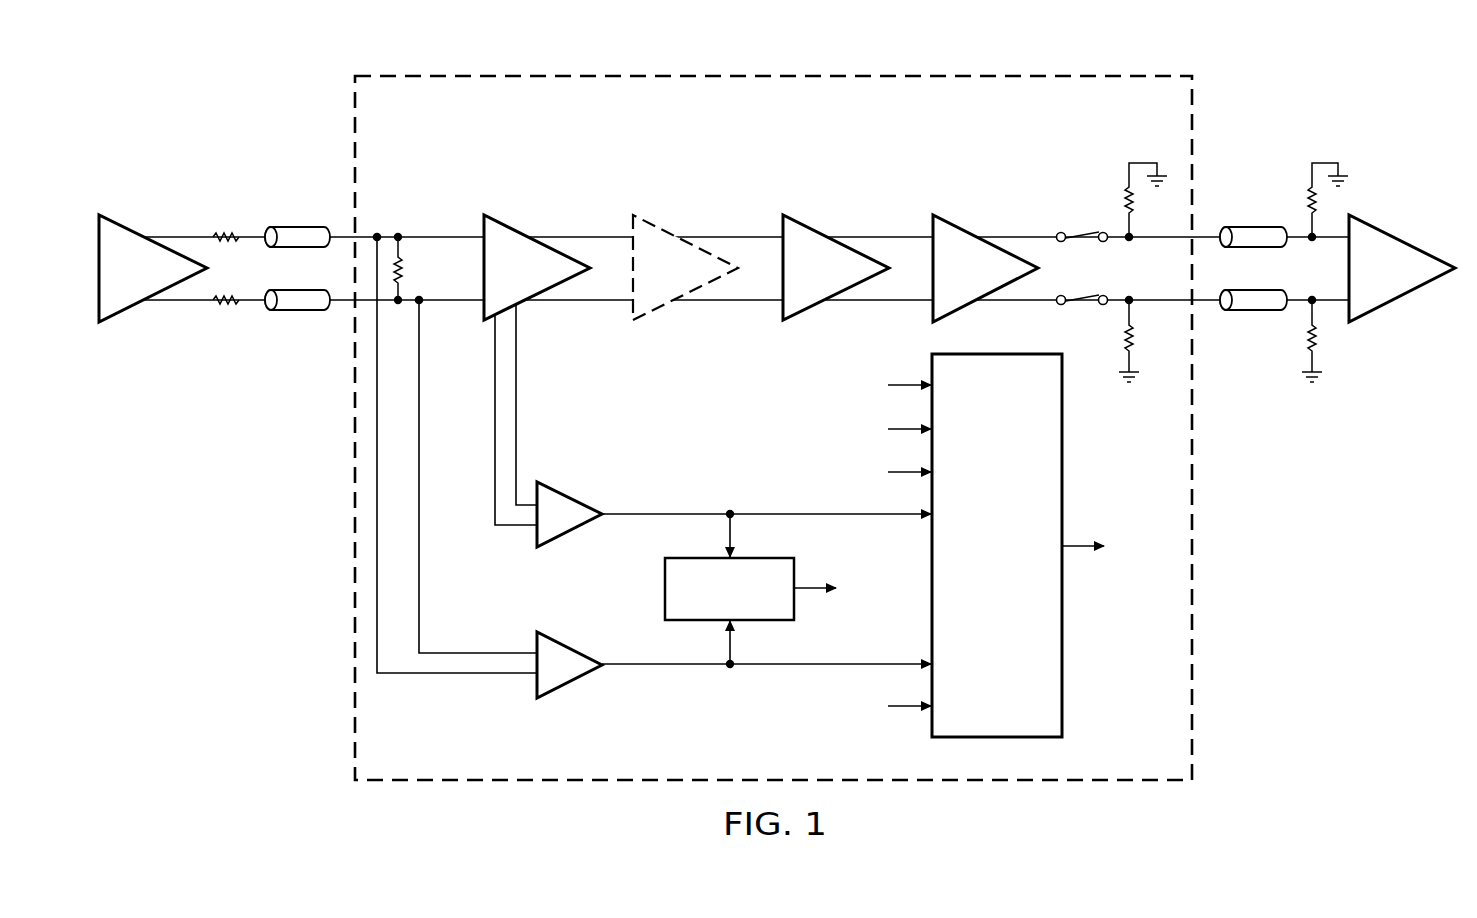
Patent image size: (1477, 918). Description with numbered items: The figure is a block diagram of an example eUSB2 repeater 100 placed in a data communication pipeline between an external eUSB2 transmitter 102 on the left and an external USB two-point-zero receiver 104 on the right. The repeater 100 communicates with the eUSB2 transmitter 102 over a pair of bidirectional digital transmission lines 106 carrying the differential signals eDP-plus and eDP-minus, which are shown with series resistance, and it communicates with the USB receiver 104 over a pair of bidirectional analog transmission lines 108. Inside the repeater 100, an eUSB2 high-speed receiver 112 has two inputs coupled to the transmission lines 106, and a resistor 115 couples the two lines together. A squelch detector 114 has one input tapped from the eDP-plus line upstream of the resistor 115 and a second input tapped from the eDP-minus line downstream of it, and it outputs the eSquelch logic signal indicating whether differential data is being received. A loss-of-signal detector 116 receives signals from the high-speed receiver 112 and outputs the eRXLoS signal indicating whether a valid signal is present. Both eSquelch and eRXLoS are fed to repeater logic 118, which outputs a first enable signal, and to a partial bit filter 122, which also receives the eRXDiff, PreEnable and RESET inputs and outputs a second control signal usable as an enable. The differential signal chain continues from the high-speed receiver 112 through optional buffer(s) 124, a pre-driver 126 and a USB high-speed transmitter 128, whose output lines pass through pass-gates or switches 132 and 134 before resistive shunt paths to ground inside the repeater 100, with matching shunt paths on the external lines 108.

The eUSB2 repeater 100 is at (640, 68).
The eUSB2 transmitter 102 is at (120, 223).
The USB 2.0 receiver 104 is at (1407, 239).
The bidirectional digital transmission lines 106 is at (225, 208).
The bidirectional analog transmission lines 108 is at (1262, 180).
The eUSB2 high-speed receiver 112 is at (506, 225).
The squelch detector 114 is at (572, 684).
The resistor 115 is at (406, 270).
The loss-of-signal detector 116 is at (573, 493).
The repeater logic 118 is at (665, 598).
The partial bit filter 122 is at (1016, 590).
The buffer(s) 124 is at (658, 228).
The pre-driver 126 is at (805, 224).
The USB 2.0 high-speed transmitter 128 is at (955, 225).
The switch 132 is at (1085, 231).
The switch 134 is at (1080, 306).